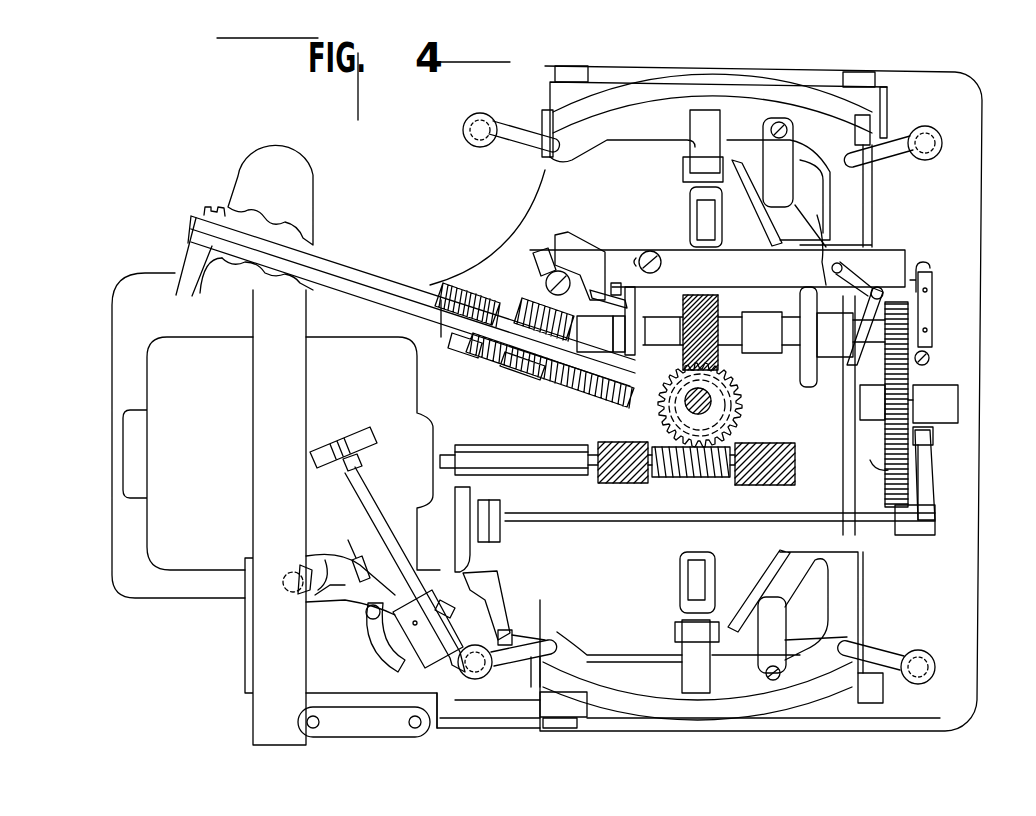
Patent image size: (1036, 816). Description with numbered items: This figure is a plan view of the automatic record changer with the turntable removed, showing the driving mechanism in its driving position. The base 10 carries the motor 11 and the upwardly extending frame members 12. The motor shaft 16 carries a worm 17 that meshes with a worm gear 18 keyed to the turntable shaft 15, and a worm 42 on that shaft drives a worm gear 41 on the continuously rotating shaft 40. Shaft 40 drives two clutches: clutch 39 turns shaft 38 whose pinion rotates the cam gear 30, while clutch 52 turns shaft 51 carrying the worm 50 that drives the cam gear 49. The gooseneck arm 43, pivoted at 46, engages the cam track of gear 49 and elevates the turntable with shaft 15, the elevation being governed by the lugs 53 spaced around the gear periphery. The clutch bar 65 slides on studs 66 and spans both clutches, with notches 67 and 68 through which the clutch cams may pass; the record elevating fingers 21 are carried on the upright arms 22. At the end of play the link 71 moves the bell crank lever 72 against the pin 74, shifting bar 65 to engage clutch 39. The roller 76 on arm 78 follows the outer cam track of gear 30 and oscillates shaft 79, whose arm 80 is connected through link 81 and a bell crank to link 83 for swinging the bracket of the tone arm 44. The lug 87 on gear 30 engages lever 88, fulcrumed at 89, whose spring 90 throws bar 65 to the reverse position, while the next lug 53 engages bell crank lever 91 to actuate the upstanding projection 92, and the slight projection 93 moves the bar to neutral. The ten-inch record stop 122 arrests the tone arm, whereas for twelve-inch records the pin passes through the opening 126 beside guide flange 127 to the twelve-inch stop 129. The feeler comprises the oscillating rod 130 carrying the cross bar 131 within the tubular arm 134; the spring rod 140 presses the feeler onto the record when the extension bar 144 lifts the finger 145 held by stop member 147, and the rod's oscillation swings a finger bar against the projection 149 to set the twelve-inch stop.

The base 10 is at (967, 290).
The motor 11 is at (326, 493).
The frame members 12 is at (628, 478).
The shaft 15 is at (713, 397).
The motor shaft 16 is at (497, 450).
The worm 17 is at (700, 474).
The worm gear 18 is at (652, 413).
The record engaging and elevating fingers 21 is at (477, 157).
The upright arms 22 is at (518, 150).
The cam gear 30 is at (907, 483).
The shaft 38 is at (830, 367).
The clutch 39 is at (800, 383).
The shaft 40 is at (757, 313).
The worm gear 41 is at (713, 301).
The worm 42 is at (717, 377).
The arm 43 is at (345, 268).
The tone arm 44 is at (308, 188).
The pivot 46 is at (205, 208).
The cam gear 49 is at (448, 283).
The worm 50 is at (522, 300).
The shaft 51 is at (605, 306).
The clutch 52 is at (632, 303).
The lugs 53 is at (452, 285).
The clutch bar 65 is at (733, 260).
The studs 66 is at (650, 250).
The notch 67 is at (827, 283).
The notch 68 is at (613, 283).
The link 71 is at (847, 427).
The bell crank lever 72 is at (860, 290).
The pin 74 is at (840, 268).
The roller 76 is at (927, 447).
The arm 78 is at (927, 497).
The shaft 79 is at (808, 522).
The arm 80 is at (463, 497).
The link 81 is at (410, 568).
The link 83 is at (364, 722).
The lug 87 is at (900, 386).
The lever 88 is at (935, 340).
The fulcrum 89 is at (922, 368).
The spring 90 is at (928, 270).
The bell crank lever 91 is at (540, 270).
The upstanding projection 92 is at (563, 245).
The projection 93 is at (872, 456).
The ten-inch record stop 122 is at (362, 553).
The opening 126 is at (303, 593).
The guide flange 127 is at (305, 570).
The twelve-inch record stop 129 is at (320, 575).
The oscillating rod 130 is at (358, 464).
The cross bar 131 is at (360, 437).
The tubular arm 134 is at (373, 510).
The spring rod 140 is at (463, 583).
The extension bar 144 is at (502, 693).
The finger 145 is at (507, 620).
The stop member 147 is at (540, 630).
The projection 149 is at (387, 662).